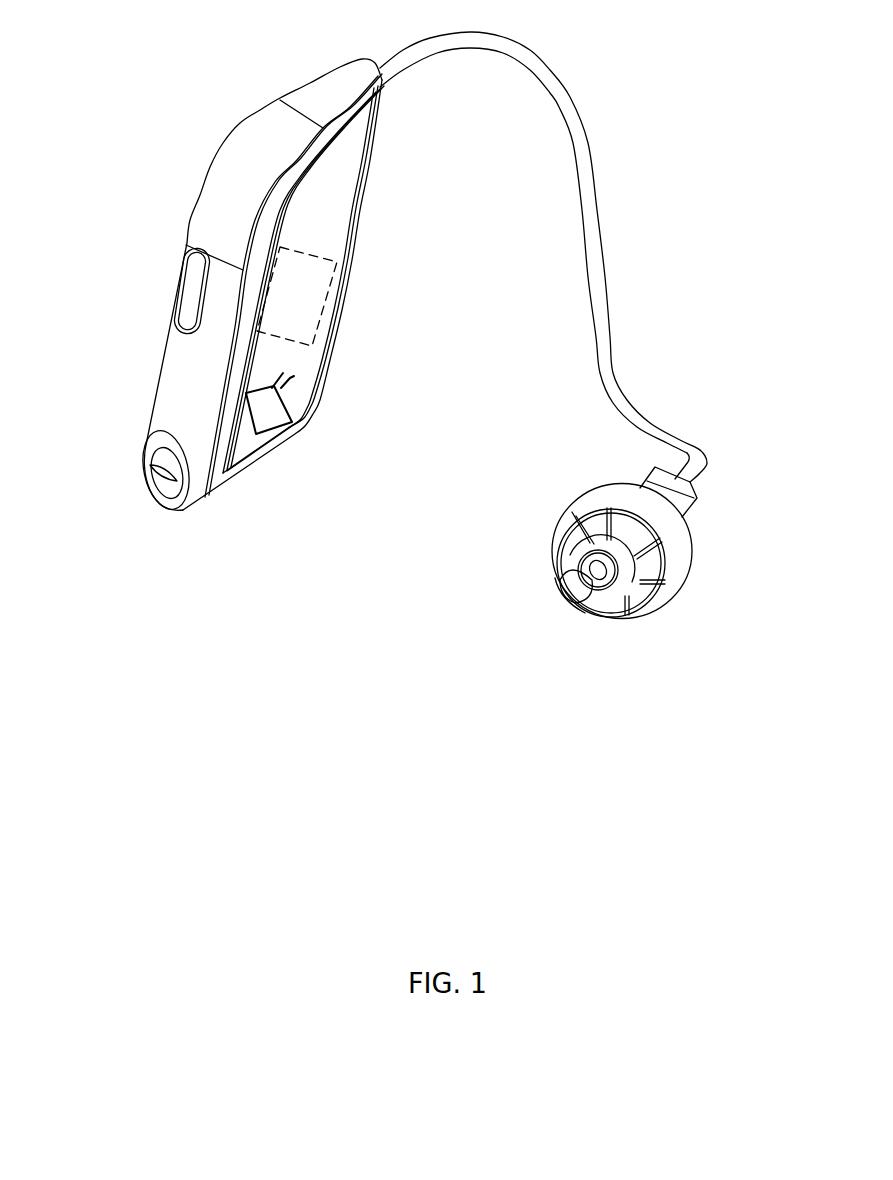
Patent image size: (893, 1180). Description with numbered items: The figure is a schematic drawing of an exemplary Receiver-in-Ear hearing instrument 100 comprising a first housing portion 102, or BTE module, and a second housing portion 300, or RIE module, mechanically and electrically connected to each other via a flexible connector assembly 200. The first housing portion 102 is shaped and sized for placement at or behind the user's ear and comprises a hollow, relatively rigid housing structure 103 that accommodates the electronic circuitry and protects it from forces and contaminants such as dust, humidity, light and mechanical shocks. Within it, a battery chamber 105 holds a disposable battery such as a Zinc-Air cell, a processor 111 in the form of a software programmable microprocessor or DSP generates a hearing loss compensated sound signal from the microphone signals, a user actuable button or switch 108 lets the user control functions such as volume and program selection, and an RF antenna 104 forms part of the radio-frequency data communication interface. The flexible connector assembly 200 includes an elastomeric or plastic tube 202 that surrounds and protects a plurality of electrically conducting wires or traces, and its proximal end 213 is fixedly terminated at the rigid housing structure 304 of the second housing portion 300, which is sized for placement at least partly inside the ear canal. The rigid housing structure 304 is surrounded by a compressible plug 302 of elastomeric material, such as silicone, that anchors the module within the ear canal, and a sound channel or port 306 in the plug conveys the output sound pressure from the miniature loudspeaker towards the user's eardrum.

The RIE hearing instrument 100 is at (215, 618).
The first housing portion 102 is at (208, 158).
The rigid housing structure 103 is at (360, 213).
The RF antenna 104 is at (300, 407).
The battery chamber 105 is at (147, 478).
The user actuable button or switch 108 is at (182, 308).
The processor 111 is at (343, 283).
The flexible connector assembly 200 is at (587, 108).
The elastomeric or plastic tube 202 is at (587, 263).
The proximal end 213 is at (672, 472).
The second housing portion 300 is at (530, 553).
The compressible plug 302 is at (560, 520).
The rigid housing structure 304 is at (687, 510).
The sound channel or port 306 is at (577, 593).